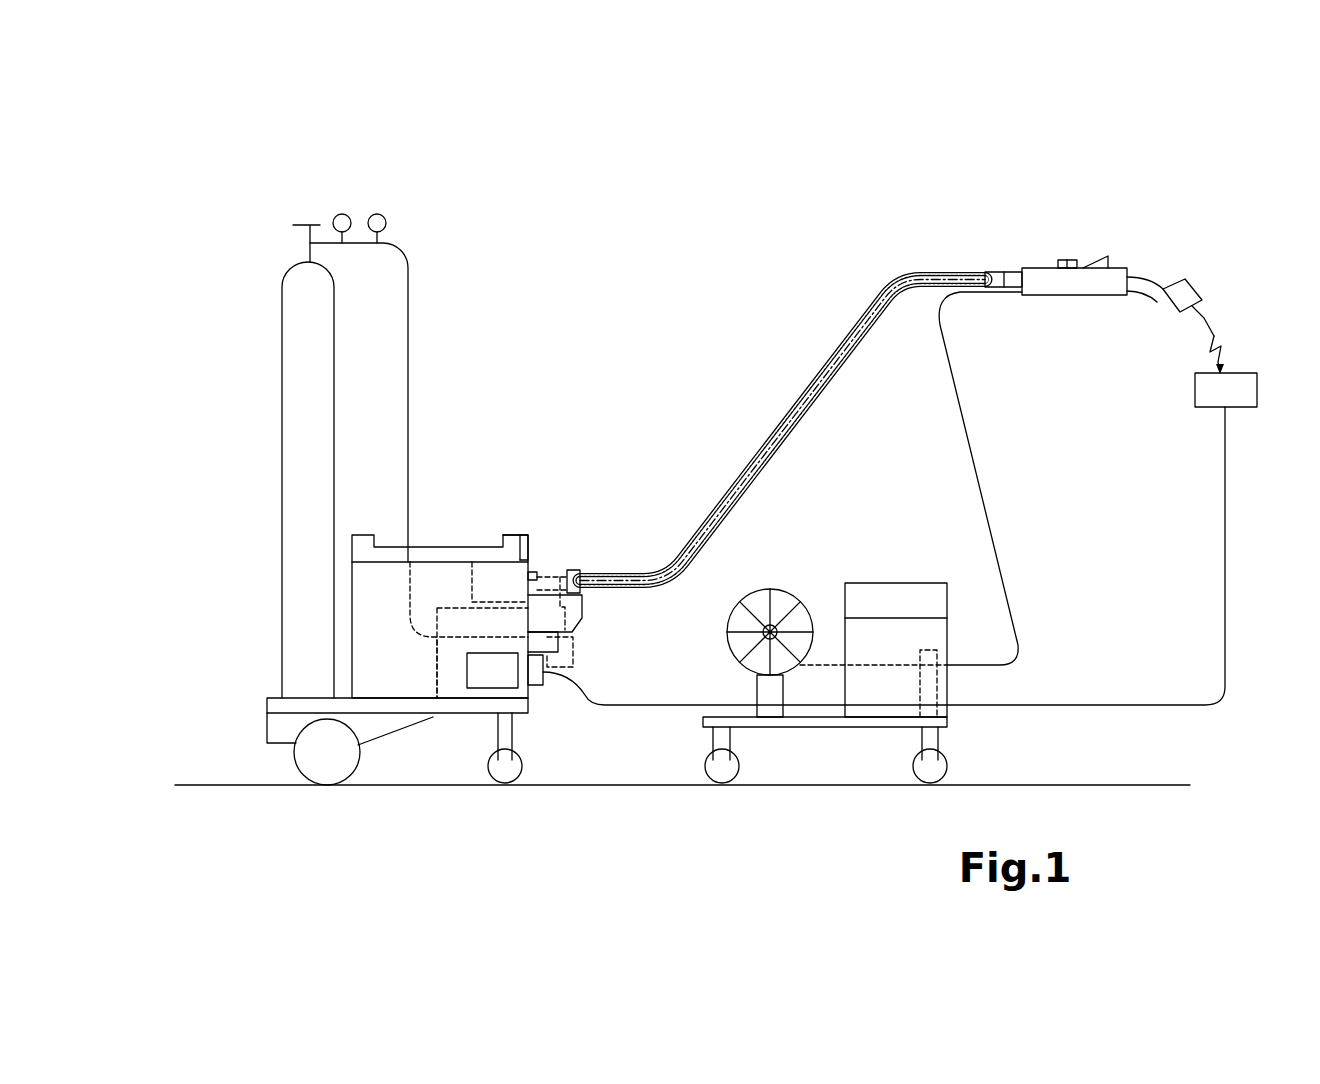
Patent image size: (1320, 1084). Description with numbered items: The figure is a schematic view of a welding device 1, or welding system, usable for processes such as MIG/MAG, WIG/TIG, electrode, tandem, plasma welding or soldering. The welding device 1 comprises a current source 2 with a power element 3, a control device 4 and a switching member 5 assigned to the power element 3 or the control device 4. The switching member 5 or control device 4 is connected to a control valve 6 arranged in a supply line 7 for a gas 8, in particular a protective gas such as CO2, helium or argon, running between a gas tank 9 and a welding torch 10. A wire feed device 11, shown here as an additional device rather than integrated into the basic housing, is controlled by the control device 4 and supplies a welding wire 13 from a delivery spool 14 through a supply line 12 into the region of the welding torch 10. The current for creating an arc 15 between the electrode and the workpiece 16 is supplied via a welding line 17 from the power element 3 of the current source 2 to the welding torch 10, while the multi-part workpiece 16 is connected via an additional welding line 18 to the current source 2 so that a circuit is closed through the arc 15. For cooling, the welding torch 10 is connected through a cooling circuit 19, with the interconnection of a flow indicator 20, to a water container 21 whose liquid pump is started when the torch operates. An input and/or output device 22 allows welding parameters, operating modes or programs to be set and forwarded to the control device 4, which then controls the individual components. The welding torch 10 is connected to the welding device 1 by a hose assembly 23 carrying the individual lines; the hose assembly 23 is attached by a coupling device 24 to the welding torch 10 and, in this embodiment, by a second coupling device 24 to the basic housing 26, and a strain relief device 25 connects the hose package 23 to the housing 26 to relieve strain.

The welding device 1 is at (243, 211).
The current source 2 is at (481, 432).
The power element 3 is at (487, 678).
The control device 4 is at (435, 664).
The switching member 5 is at (542, 700).
The control valve 6 is at (542, 648).
The supply line 7 is at (913, 290).
The gas 8 is at (1196, 277).
The gas tank 9 is at (308, 337).
The welding torch 10 is at (1115, 242).
The wire feed device 11 is at (993, 748).
The supply line 12 is at (986, 499).
The welding wire 13 is at (871, 666).
The delivery spool 14 is at (778, 600).
The arc 15 is at (1198, 358).
The workpiece 16 is at (1232, 392).
The welding line 17 is at (848, 332).
The additional welding line 18 is at (1229, 577).
The cooling circuit 19 is at (860, 308).
The flow indicator 20 is at (558, 577).
The water container 21 is at (492, 573).
The input and/or output device 22 is at (522, 547).
The hose assembly 23 is at (866, 257).
The coupling device 24 is at (586, 562).
The strain relief device 25 is at (577, 588).
The housing 26 is at (342, 577).